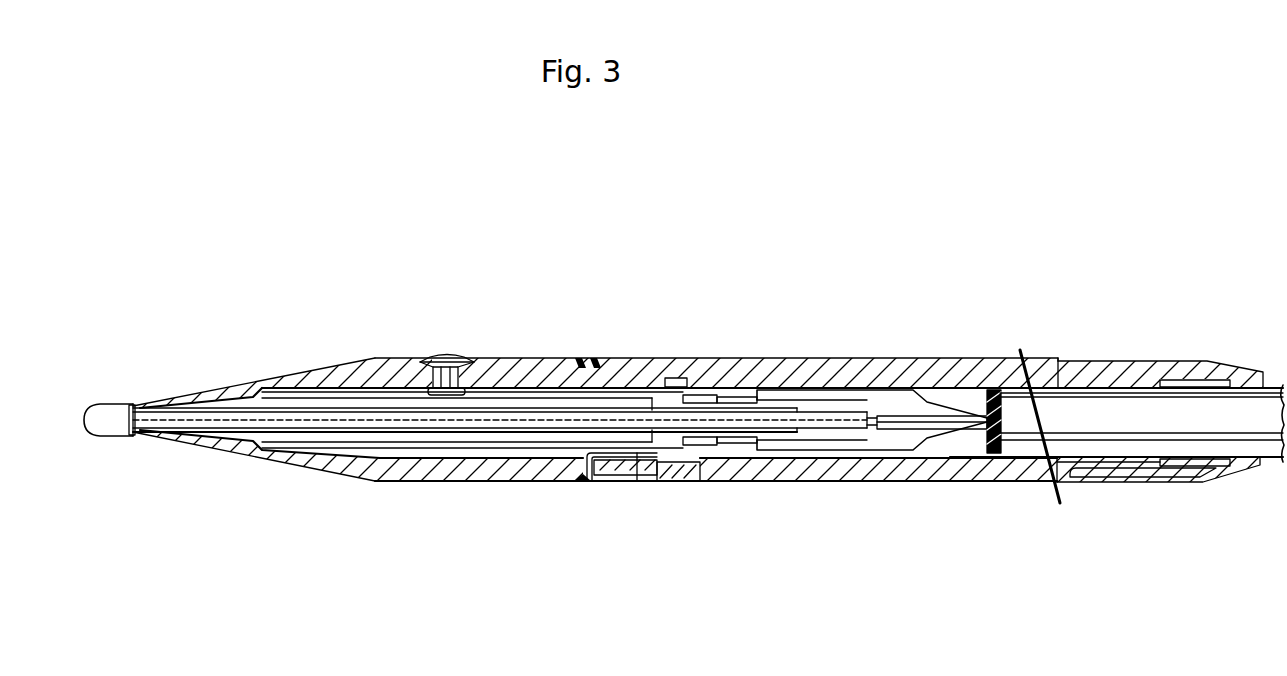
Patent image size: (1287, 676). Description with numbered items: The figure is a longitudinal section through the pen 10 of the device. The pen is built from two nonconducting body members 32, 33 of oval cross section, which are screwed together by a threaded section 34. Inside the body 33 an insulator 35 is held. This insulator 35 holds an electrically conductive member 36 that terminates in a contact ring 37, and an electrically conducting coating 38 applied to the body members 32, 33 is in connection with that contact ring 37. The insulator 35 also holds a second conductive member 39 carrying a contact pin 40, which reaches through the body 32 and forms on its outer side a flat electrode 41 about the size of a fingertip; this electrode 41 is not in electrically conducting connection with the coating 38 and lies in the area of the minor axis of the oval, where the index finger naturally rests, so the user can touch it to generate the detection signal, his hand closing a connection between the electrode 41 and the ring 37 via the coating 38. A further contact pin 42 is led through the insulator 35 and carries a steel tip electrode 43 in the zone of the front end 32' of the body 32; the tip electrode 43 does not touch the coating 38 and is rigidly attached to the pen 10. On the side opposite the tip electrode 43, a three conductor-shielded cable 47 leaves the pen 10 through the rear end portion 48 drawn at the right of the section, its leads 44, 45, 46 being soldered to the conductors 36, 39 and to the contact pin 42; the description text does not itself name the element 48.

The pen 10 is at (805, 310).
The body member 32 is at (660, 463).
The front end 32' is at (256, 396).
The body member 33 is at (755, 472).
The threaded section 34 is at (637, 472).
The insulator 35 is at (663, 440).
The electrically conductive member 36 is at (623, 455).
The contact ring 37 is at (583, 477).
The electrically conducting coating 38 is at (463, 483).
The second conductive member 39 is at (610, 387).
The contact pin 40 is at (463, 360).
The flat electrode 41 is at (432, 358).
The contact pin 42 is at (227, 420).
The tip electrode 43 is at (113, 415).
The lead 44 is at (910, 450).
The lead 45 is at (873, 398).
The lead 46 is at (932, 414).
The three conductor-shielded cable 47 is at (1000, 456).
The end tube 48 is at (1127, 432).